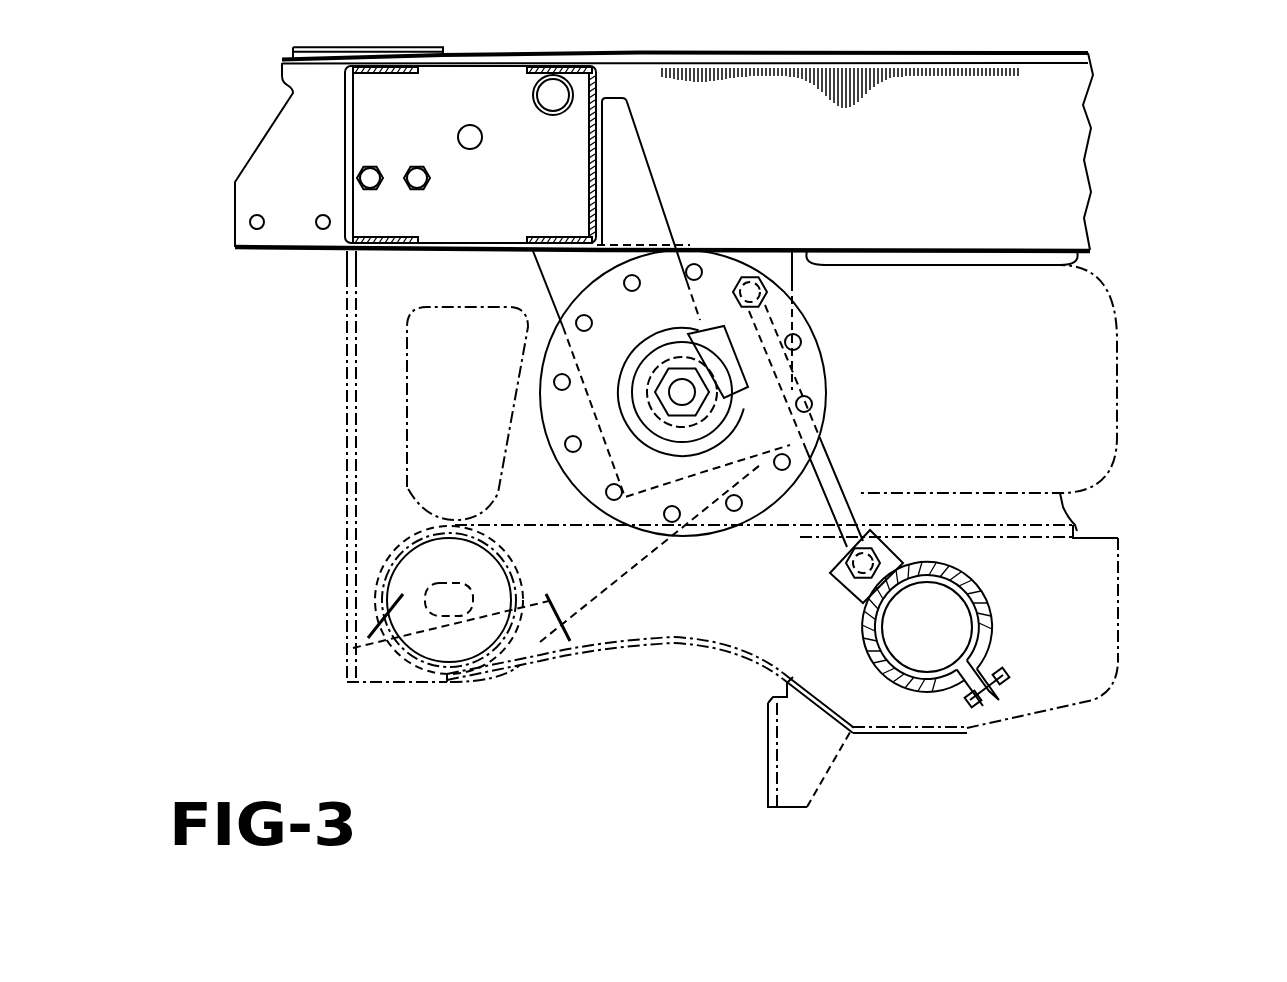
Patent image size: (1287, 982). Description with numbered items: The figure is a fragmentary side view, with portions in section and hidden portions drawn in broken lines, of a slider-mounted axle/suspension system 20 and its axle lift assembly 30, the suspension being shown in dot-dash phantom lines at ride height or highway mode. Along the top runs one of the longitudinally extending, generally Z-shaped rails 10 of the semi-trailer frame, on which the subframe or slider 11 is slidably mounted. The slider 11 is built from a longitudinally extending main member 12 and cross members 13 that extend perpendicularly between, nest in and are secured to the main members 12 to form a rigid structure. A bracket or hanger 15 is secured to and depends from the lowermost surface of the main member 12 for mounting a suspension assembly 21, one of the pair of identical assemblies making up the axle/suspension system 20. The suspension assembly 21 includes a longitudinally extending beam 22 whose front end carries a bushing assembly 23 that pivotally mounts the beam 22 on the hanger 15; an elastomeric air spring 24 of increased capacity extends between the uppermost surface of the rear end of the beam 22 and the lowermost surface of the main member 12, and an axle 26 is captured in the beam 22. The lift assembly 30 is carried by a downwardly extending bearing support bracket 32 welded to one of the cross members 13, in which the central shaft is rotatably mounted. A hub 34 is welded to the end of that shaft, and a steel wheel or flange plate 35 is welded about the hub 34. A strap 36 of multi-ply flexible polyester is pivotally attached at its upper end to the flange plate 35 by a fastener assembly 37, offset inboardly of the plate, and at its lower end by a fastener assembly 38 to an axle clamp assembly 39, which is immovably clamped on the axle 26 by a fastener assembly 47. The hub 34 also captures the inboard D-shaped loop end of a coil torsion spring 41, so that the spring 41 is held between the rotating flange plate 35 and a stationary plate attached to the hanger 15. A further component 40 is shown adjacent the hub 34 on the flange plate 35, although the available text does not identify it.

The rails 10 is at (317, 47).
The slider 11 is at (1099, 116).
The main member 12 is at (1055, 202).
The cross member 13 is at (593, 152).
The hanger 15 is at (350, 487).
The axle/suspension system 20 is at (1131, 558).
The suspension assembly 21 is at (1118, 658).
The beam 22 is at (572, 647).
The bushing assembly 23 is at (345, 655).
The air spring 24 is at (1065, 395).
The axle 26 is at (917, 680).
The axle lift assembly 30 is at (824, 327).
The bearing support bracket 32 is at (623, 145).
The hub 34 is at (660, 417).
The flange plate 35 is at (545, 355).
The strap 36 is at (827, 468).
The fastener assembly 37 is at (749, 283).
The fastener assembly 38 is at (852, 572).
The axle clamp assembly 39 is at (993, 617).
The stop tab 40 is at (733, 350).
The coil torsion spring 41 is at (623, 403).
The fastener assembly 47 is at (1002, 677).